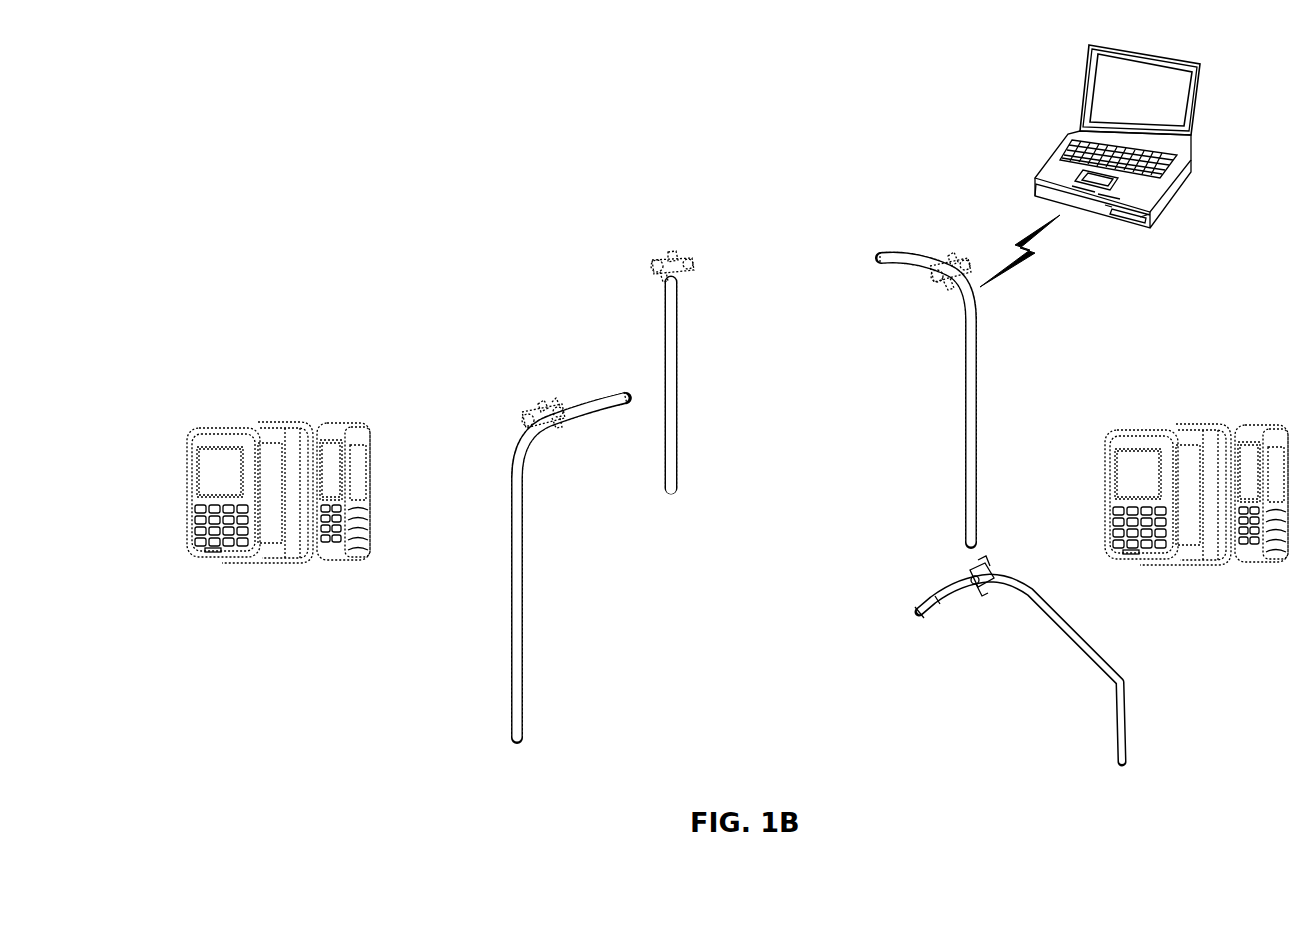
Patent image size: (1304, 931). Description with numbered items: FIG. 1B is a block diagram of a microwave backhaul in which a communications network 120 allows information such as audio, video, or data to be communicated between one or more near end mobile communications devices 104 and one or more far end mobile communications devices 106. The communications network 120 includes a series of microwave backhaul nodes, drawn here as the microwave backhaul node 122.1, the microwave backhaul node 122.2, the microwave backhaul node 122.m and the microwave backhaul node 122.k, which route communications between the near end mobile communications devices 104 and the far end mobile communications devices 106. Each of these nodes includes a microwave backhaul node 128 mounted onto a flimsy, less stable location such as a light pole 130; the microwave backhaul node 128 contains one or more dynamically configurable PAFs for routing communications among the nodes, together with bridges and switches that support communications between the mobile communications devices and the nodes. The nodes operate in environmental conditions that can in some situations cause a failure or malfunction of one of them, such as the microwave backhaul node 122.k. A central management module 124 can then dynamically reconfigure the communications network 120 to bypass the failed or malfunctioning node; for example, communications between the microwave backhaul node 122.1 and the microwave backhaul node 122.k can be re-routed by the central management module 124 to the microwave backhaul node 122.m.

The communications network 120 is at (251, 172).
The near end mobile communications devices 104 is at (292, 405).
The far end mobile communications devices 106 is at (1212, 405).
The central management module 124 is at (1068, 82).
The microwave backhaul node 122.1 is at (497, 622).
The microwave backhaul node 122.2 is at (657, 329).
The microwave backhaul node 122.m is at (983, 425).
The microwave backhaul node 122.k is at (1015, 602).
The microwave backhaul node 128 is at (531, 408).
The light pole 130 is at (508, 530).